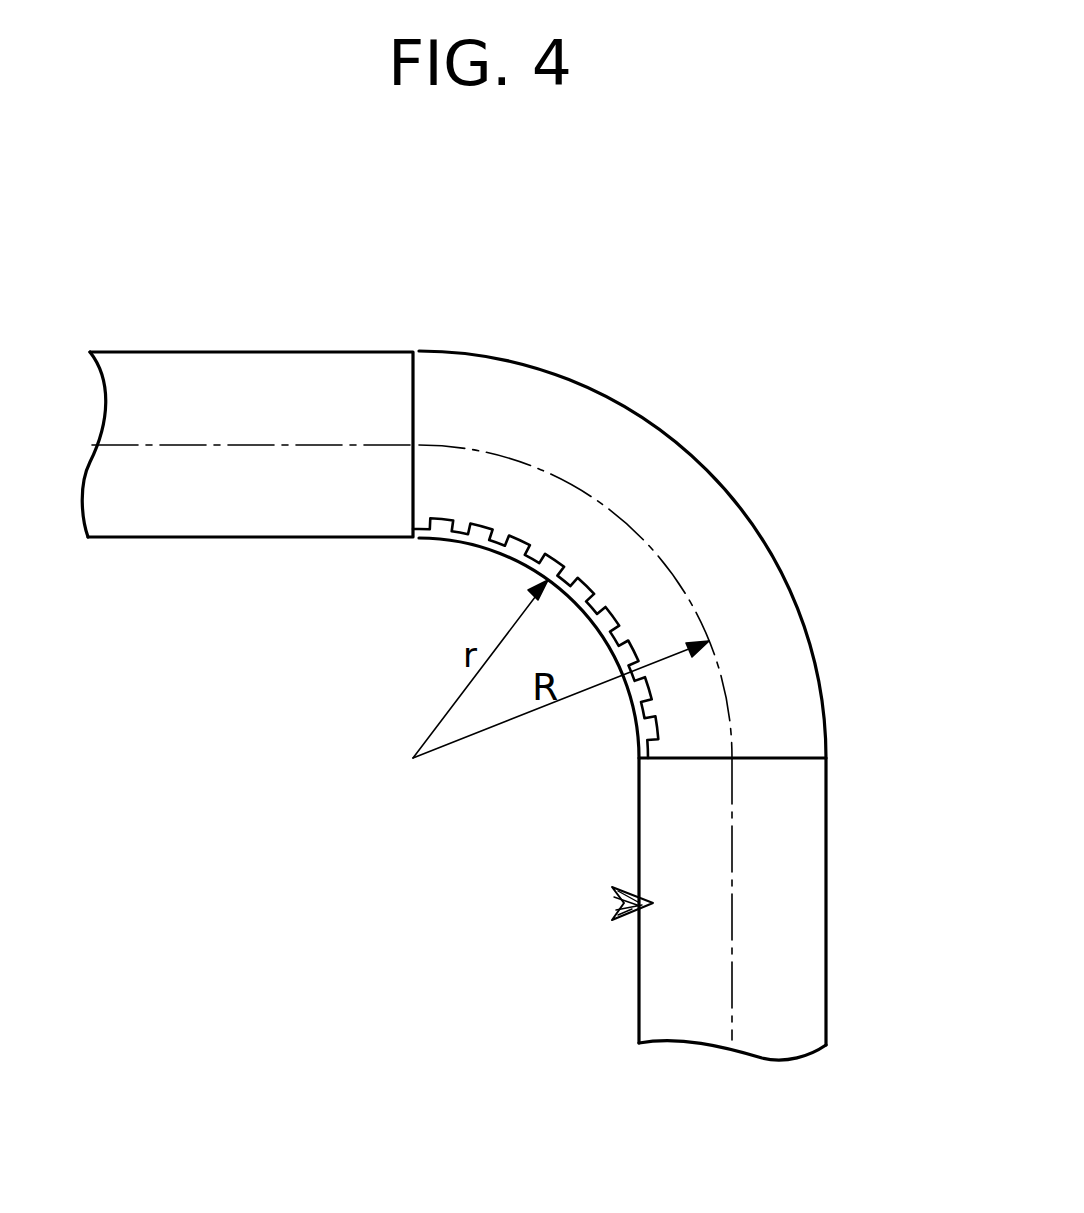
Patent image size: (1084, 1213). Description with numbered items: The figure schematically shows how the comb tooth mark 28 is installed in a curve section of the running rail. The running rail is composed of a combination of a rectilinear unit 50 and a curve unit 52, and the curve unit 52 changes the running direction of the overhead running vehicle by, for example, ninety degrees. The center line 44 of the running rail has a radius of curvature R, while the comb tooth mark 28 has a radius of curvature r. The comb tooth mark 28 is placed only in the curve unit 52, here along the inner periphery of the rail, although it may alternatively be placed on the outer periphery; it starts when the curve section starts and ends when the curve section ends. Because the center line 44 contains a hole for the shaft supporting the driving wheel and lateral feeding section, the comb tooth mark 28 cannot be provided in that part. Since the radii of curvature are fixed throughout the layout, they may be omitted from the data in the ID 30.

The rectilinear unit 50 is at (260, 352).
The curve unit 52 is at (709, 467).
The comb tooth mark 28 is at (440, 540).
The ID 30 is at (612, 902).
The center line 44 is at (732, 930).